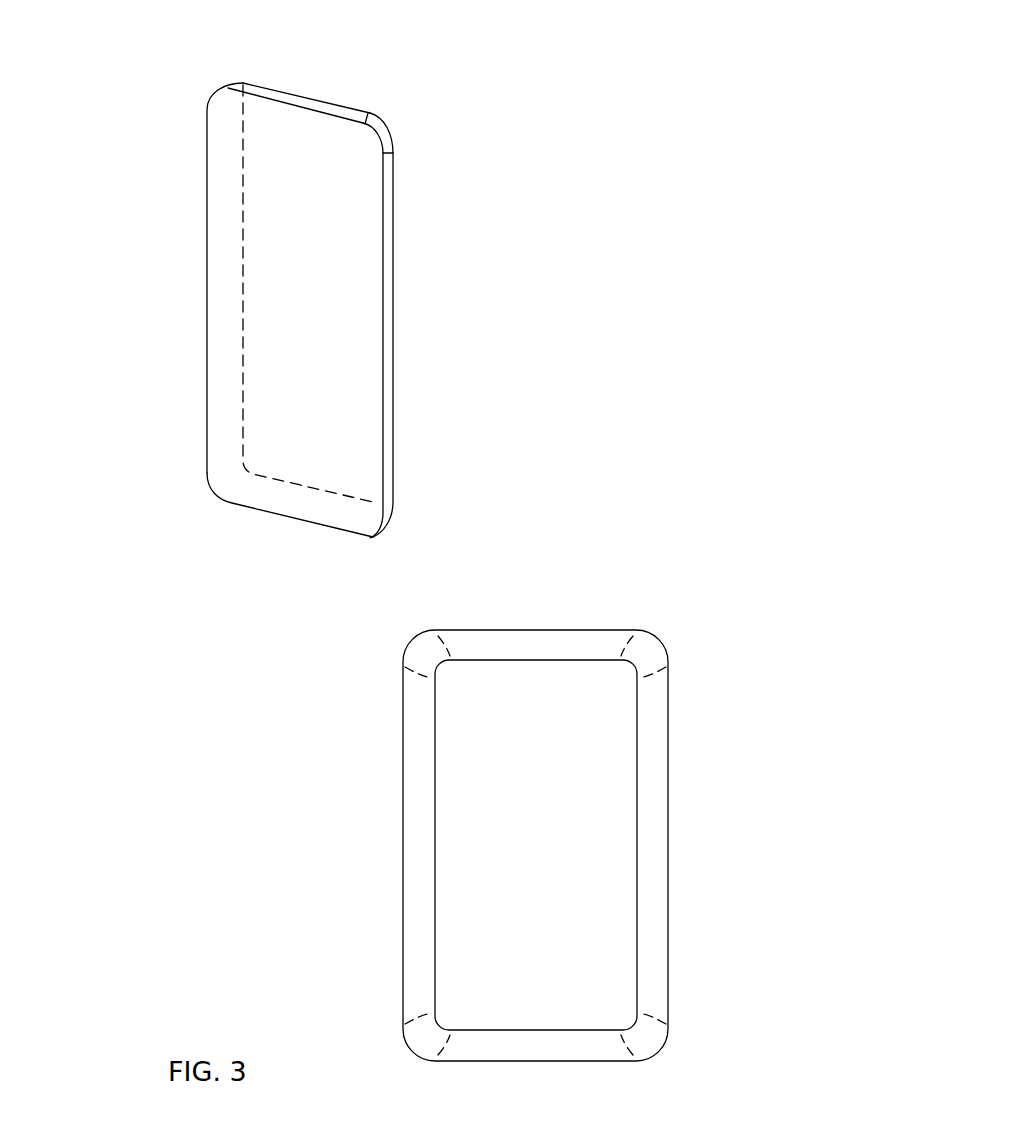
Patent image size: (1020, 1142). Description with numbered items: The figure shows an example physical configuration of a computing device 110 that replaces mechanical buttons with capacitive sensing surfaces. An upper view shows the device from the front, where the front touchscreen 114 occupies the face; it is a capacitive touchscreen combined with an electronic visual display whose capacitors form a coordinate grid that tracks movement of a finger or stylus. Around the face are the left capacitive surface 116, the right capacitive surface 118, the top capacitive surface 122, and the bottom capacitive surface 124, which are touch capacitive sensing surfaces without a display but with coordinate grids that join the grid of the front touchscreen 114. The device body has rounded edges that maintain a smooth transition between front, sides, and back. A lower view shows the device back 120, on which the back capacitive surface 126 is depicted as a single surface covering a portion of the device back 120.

The computing device 110 is at (600, 53).
The front touchscreen 114 is at (207, 158).
The left capacitive surface 116 is at (215, 269).
The right capacitive surface 118 is at (390, 278).
The device back 120 is at (385, 123).
The top capacitive surface 122 is at (313, 97).
The bottom capacitive surface 124 is at (273, 498).
The back capacitive surface 126 is at (657, 845).